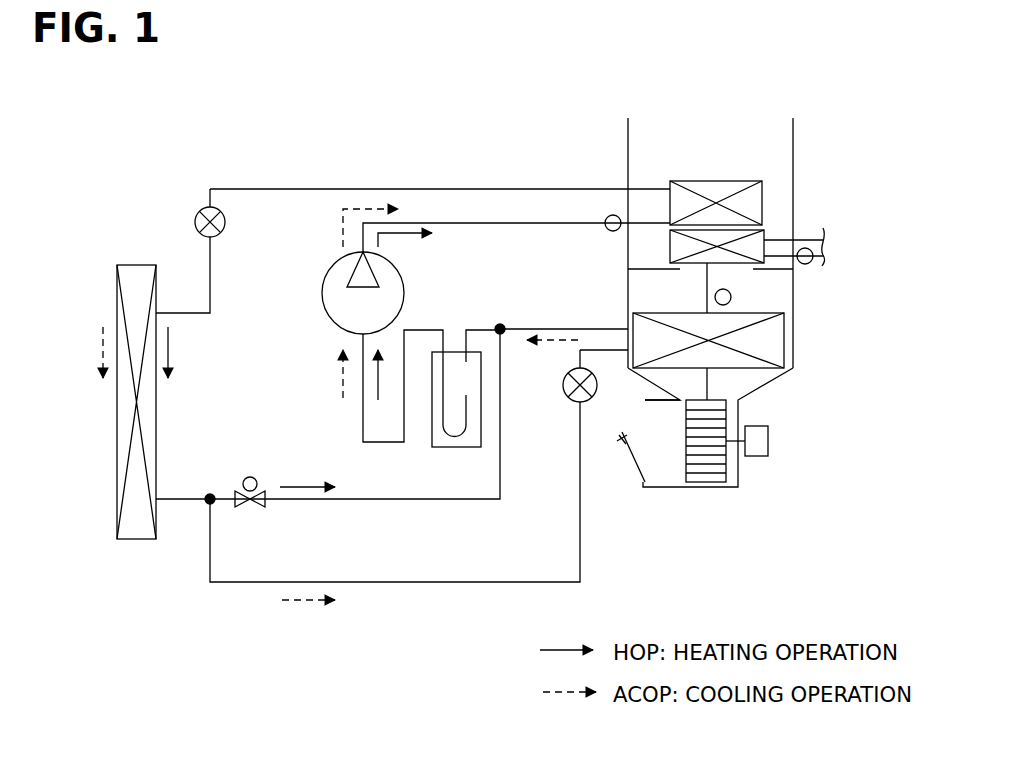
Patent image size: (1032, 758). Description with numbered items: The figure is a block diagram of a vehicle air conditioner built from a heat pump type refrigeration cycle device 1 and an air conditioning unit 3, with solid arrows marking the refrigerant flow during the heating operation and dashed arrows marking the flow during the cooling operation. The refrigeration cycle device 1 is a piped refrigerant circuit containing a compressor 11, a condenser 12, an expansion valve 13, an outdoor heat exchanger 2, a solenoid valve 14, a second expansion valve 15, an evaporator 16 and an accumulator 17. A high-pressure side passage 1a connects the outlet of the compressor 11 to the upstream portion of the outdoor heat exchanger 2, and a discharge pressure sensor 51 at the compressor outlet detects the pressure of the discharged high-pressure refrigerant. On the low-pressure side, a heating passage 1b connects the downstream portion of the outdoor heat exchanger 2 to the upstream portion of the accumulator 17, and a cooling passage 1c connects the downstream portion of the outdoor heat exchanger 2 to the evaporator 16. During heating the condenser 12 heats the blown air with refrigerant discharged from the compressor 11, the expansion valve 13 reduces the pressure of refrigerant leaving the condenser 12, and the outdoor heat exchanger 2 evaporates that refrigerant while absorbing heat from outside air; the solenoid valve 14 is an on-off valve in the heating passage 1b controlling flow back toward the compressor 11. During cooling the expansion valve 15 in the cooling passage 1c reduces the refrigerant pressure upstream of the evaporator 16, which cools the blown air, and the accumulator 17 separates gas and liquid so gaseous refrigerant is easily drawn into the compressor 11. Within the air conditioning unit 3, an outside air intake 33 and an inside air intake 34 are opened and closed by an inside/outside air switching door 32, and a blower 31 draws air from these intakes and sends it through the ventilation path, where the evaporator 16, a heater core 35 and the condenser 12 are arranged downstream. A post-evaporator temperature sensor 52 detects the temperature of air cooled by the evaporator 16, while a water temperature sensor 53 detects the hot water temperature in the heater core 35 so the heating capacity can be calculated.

The refrigeration cycle device 1 is at (468, 166).
The high-pressure side passage 1a is at (395, 189).
The heating passage 1b is at (353, 500).
The cooling passage 1c is at (397, 583).
The outdoor heat exchanger 2 is at (117, 412).
The air conditioning unit 3 is at (705, 489).
The compressor 11 is at (403, 270).
The condenser 12 is at (736, 181).
The expansion valve 13 is at (198, 214).
The solenoid valve 14 is at (253, 477).
The expansion valve 15 is at (565, 392).
The evaporator 16 is at (784, 330).
The accumulator 17 is at (460, 447).
The blower 31 is at (750, 466).
The inside/outside air switching door 32 is at (636, 460).
The outside air intake 33 is at (633, 465).
The inside air intake 34 is at (632, 424).
The heater core 35 is at (765, 232).
The discharge pressure sensor 51 is at (606, 229).
The post-evaporator temperature sensor 52 is at (731, 296).
The water temperature sensor 53 is at (812, 262).